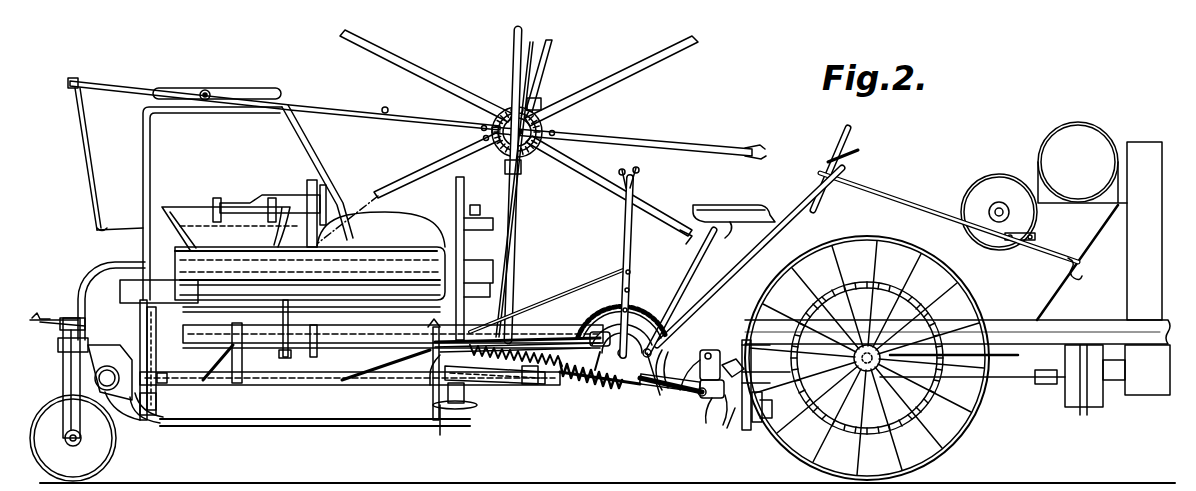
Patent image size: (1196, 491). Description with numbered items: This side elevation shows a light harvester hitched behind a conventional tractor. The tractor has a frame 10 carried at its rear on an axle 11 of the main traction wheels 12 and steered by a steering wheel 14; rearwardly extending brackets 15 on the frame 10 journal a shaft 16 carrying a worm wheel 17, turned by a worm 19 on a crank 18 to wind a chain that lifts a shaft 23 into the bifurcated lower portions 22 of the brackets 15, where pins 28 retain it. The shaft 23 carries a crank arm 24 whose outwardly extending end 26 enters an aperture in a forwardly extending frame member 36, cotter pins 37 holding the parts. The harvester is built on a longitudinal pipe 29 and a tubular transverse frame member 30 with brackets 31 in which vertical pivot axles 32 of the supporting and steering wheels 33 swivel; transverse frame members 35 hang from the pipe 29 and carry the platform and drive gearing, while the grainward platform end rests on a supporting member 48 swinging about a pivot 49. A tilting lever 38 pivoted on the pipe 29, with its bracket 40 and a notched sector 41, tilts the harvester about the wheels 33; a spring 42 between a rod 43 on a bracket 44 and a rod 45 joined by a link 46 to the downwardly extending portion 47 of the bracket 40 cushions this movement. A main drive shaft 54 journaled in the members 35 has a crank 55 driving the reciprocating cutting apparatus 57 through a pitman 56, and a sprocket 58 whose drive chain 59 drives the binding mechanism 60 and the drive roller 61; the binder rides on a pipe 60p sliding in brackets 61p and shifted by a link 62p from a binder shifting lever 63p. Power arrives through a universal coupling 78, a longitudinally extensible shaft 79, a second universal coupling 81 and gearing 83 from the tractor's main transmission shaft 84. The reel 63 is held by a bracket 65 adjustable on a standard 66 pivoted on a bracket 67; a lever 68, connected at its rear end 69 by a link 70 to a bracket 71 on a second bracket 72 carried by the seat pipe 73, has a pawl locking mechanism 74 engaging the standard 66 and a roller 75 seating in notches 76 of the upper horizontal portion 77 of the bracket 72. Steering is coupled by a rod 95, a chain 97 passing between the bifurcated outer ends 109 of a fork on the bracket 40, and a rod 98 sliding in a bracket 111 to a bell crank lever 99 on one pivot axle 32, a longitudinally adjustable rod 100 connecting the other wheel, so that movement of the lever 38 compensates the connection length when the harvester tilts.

The frame 10 is at (1075, 378).
The axle 11 is at (965, 424).
The main traction wheels 12 is at (945, 455).
The steering wheel 14 is at (852, 133).
The brackets 15 is at (690, 395).
The shaft 16 is at (758, 335).
The worm wheel 17 is at (725, 362).
The crank 18 is at (706, 348).
The worm 19 is at (755, 420).
The bifurcated lower portions 22 is at (710, 405).
The shaft 23 is at (735, 425).
The crank arm 24 is at (760, 222).
The outwardly extending end portion 26 is at (712, 282).
The pins 28 is at (720, 420).
The longitudinal frame member 29 is at (545, 352).
The transverse frame member 30 is at (105, 408).
The brackets 31 is at (65, 345).
The vertical pivot axles 32 is at (62, 372).
The supporting and steering wheels 33 is at (110, 458).
The transverse frame members 35 is at (168, 380).
The frame member 36 is at (590, 385).
The cotter pins 37 is at (648, 322).
The tilting lever 38 is at (800, 205).
The bracket 40 is at (700, 305).
The notched sector 41 is at (655, 300).
The spring 42 is at (580, 380).
The rod 43 is at (515, 385).
The bracket 44 is at (492, 384).
The rod 45 is at (643, 360).
The link 46 is at (660, 392).
The downwardly extending portion 47 is at (690, 378).
The supporting member 48 is at (215, 430).
The pivot 49 is at (160, 425).
The main drive shaft 54 is at (345, 344).
The crank 55 is at (365, 388).
The pitman 56 is at (478, 410).
The reciprocating cutting apparatus 57 is at (455, 410).
The sprocket 58 is at (156, 385).
The drive chain 59 is at (122, 300).
The binding mechanism 60 is at (372, 265).
The pipe 60p is at (285, 360).
The drive roller 61 is at (240, 360).
The brackets 61p is at (385, 348).
The link 62p is at (530, 320).
The reel 63 is at (612, 72).
The binder shifting lever 63p is at (650, 225).
The bracket 65 is at (540, 106).
The standard 66 is at (528, 192).
The bracket 67 is at (500, 300).
The lever 68 is at (648, 144).
The rear end 69 is at (115, 84).
The link 70 is at (86, 140).
The bracket 71 is at (120, 225).
The bracket 72 is at (152, 162).
The seat pipe 73 is at (118, 262).
The pawl locking mechanism 74 is at (700, 145).
The roller 75 is at (205, 90).
The notches 76 is at (232, 90).
The upper horizontal portion 77 is at (258, 104).
The universal coupling 78 is at (465, 400).
The longitudinally extensible shaft 79 is at (540, 365).
The universal coupling 81 is at (700, 396).
The gearing 83 is at (765, 420).
The main transmission shaft 84 is at (812, 418).
The rod 95 is at (1010, 360).
The chain 97 is at (590, 330).
The rod 98 is at (495, 350).
The bell crank lever 99 is at (75, 315).
The longitudinally adjustable rod 100 is at (35, 318).
The bifurcated outer ends 109 is at (628, 290).
The bracket 111 is at (182, 246).